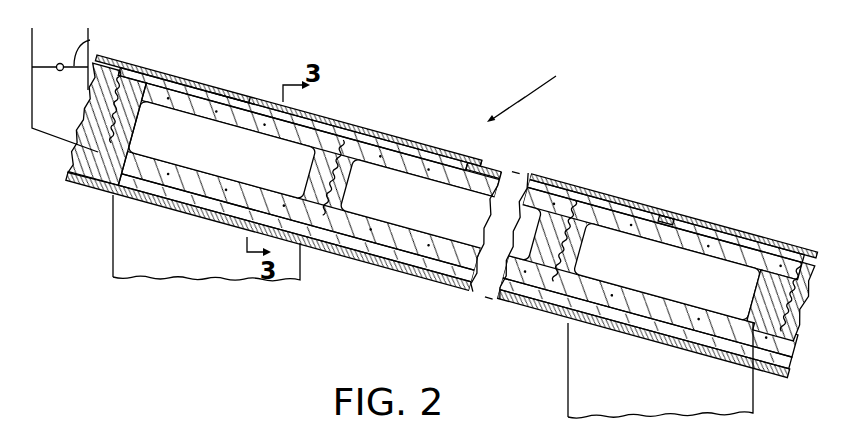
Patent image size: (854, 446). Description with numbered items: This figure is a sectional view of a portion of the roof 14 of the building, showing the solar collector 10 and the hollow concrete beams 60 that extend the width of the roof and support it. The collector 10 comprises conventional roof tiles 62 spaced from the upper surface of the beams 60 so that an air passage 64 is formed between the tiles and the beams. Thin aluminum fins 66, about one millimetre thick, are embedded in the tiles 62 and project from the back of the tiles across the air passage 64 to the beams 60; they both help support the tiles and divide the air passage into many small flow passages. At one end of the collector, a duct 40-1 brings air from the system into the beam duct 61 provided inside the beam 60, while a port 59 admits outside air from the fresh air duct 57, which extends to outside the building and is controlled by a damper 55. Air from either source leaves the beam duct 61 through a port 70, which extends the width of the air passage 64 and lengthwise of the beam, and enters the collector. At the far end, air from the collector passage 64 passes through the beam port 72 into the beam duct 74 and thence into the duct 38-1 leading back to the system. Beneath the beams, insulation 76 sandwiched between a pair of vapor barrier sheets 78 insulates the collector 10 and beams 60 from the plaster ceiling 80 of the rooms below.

The collector 10 is at (446, 223).
The roof 14 is at (531, 91).
The damper 55 is at (88, 33).
The fresh air duct 57 is at (46, 132).
The port 59 is at (117, 115).
The hollow concrete beam 60 is at (343, 207).
The beam duct 61 is at (173, 165).
The roof tile 62 is at (268, 102).
The air passage 64 is at (360, 134).
The aluminum fin 66 is at (405, 150).
The port 70 is at (134, 100).
The beam port 72 is at (755, 257).
The beam duct 74 is at (722, 258).
The insulation 76 is at (418, 258).
The vapor barrier sheet 78 is at (393, 232).
The plaster ceiling 80 is at (435, 283).
The duct 40-1 is at (118, 268).
The duct 38-1 is at (747, 400).